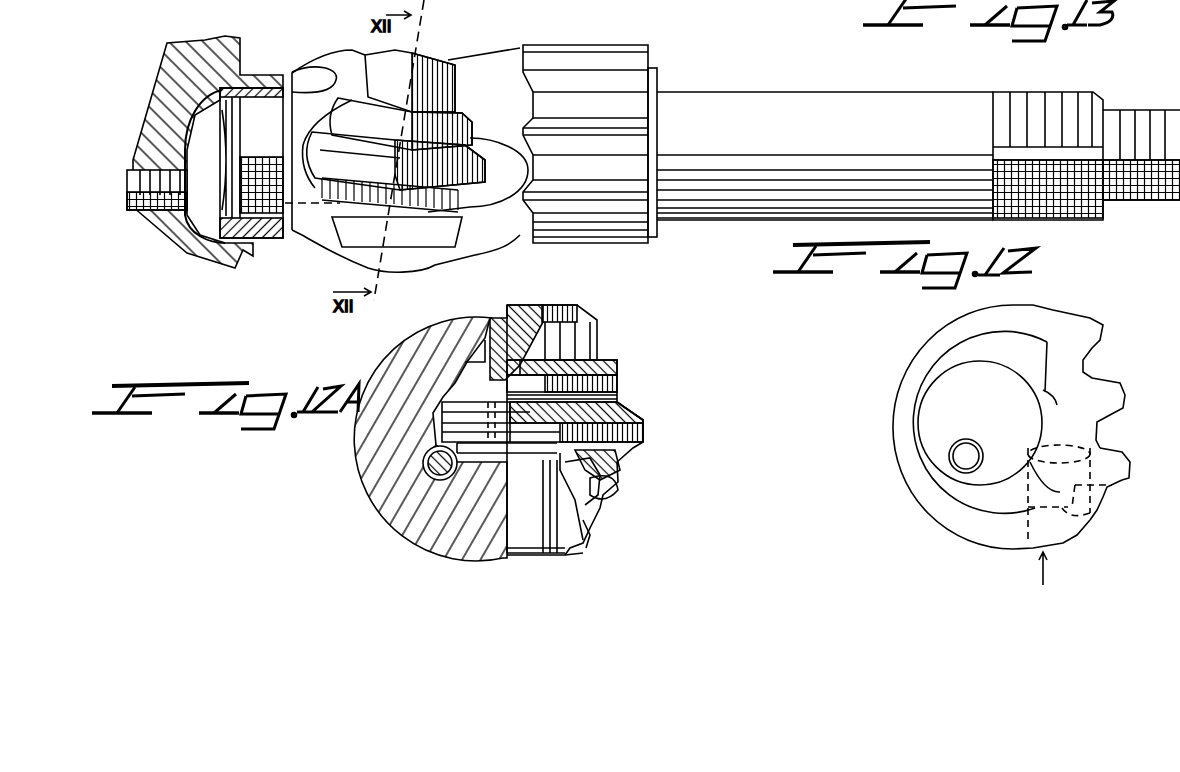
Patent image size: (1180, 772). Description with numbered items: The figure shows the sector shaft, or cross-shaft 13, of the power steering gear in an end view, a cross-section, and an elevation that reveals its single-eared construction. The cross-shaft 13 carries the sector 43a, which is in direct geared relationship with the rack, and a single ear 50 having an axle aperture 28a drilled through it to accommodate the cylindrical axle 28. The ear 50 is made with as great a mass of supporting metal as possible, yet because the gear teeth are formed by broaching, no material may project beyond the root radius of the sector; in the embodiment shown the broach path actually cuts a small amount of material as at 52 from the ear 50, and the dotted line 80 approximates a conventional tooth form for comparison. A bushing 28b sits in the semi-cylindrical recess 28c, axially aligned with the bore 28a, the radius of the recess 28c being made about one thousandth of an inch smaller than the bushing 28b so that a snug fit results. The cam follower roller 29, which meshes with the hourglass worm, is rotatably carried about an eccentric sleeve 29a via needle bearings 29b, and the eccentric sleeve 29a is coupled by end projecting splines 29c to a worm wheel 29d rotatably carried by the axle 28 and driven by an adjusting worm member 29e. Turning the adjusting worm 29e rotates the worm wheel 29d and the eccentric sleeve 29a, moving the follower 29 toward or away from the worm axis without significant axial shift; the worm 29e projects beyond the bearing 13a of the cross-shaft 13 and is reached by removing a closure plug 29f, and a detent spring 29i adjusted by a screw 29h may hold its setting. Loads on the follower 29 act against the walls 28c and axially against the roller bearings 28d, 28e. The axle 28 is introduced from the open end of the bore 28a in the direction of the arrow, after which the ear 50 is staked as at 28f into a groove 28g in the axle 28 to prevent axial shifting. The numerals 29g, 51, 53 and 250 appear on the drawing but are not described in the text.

In FIG. 12, the cross-shaft 13 is at (838, 128).
In FIG. 12, the bearing of the cross-shaft 13a is at (257, 242).
In FIG. 12, the cylindrical axle 28 is at (585, 163).
In FIG. 12A, the cylindrical axle 28 is at (530, 313).
In FIG. 13, the axle aperture 28a is at (1097, 512).
In FIG. 12, the bushing 28b is at (397, 80).
In FIG. 12A, the bushing 28b is at (597, 343).
In FIG. 12A, the semi-cylindrical recess 28c is at (474, 343).
In FIG. 13, the semi-cylindrical recess 28c is at (1095, 362).
In FIG. 12, the roller bearing 28d is at (458, 102).
In FIG. 12A, the roller bearing 28d is at (613, 393).
In FIG. 12, the roller bearing 28e is at (460, 196).
In FIG. 12A, the roller bearing 28e is at (620, 462).
In FIG. 12A, the staking 28f is at (590, 548).
In FIG. 12A, the groove 28g is at (583, 558).
In FIG. 12A, the cam follower roller 29 is at (452, 423).
In FIG. 12A, the eccentric sleeve 29a is at (612, 482).
In FIG. 12A, the needle bearings 29b is at (615, 450).
In FIG. 12A, the end projecting splines 29c is at (598, 497).
In FIG. 12, the worm wheel 29d is at (420, 200).
In FIG. 12A, the worm wheel 29d is at (458, 462).
In FIG. 12, the adjusting worm member 29e is at (192, 176).
In FIG. 12A, the adjusting worm member 29e is at (440, 465).
In FIG. 12, the closure plug 29f is at (131, 197).
In FIG. 12, the body of yoke 29g is at (163, 232).
In FIG. 12, the screw 29h is at (217, 137).
In FIG. 12, the spring 29i is at (217, 120).
In FIG. 12, the sector 43a is at (652, 62).
In FIG. 13, the ear 50 is at (1000, 520).
In FIG. 13, the cylindrical boss 51 is at (1055, 540).
In FIG. 12, the broach cut 52 is at (375, 237).
In FIG. 13, the broach cut 52 is at (1122, 495).
In FIG. 13, the tooth 53 is at (1120, 447).
In FIG. 13, the dotted line 80 is at (1090, 540).
In FIG. 12, the yoke 250 is at (456, 250).